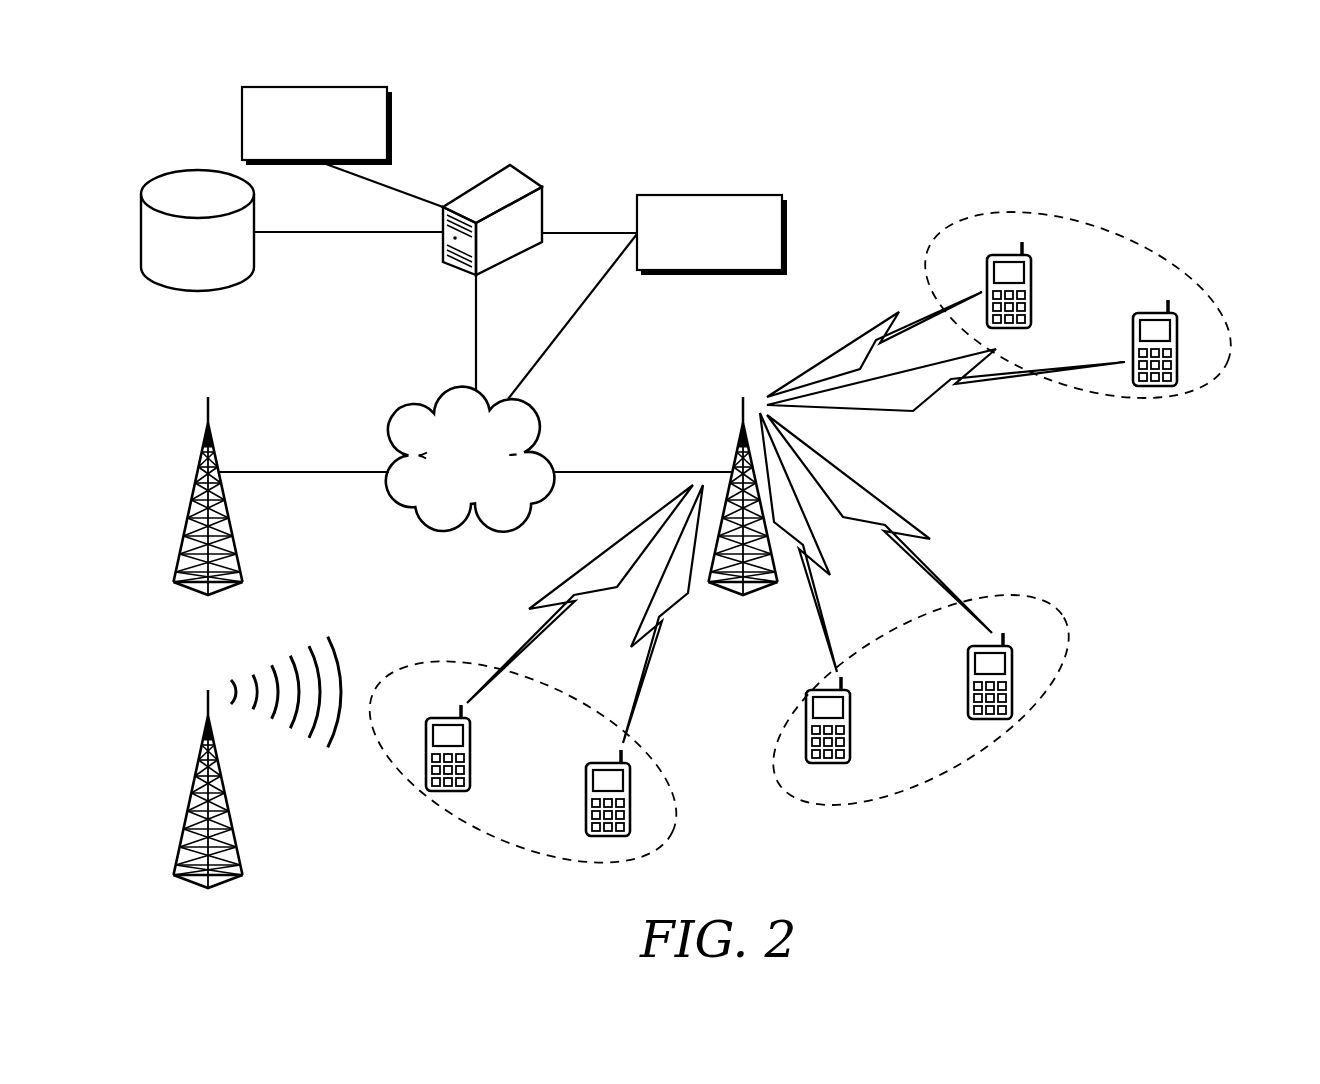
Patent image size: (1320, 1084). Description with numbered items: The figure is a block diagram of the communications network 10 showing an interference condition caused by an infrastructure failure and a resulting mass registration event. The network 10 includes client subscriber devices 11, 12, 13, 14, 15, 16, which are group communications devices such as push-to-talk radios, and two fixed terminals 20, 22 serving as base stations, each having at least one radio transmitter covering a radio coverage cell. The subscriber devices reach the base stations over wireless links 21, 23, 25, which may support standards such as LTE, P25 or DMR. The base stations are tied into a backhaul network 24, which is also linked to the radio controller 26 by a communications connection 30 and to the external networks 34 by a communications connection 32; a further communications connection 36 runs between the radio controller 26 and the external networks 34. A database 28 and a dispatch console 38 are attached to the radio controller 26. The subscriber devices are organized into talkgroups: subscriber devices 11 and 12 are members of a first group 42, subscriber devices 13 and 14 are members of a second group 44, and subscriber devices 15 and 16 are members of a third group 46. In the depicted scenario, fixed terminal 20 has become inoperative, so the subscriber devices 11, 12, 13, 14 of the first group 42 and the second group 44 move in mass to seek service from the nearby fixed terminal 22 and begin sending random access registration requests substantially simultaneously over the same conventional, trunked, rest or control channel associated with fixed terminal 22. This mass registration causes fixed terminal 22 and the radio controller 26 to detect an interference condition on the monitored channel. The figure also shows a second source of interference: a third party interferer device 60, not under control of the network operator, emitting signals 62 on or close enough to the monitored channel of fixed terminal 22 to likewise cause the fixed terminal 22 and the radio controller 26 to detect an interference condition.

The communications network 10 is at (1097, 842).
The subscriber device 11 is at (445, 718).
The subscriber device 12 is at (607, 763).
The subscriber device 13 is at (1005, 255).
The subscriber device 14 is at (1150, 313).
The subscriber device 15 is at (850, 726).
The subscriber device 16 is at (1012, 682).
The fixed terminal 20 is at (214, 438).
The wireless link 21 is at (993, 417).
The fixed terminal 22 is at (737, 449).
The wireless link 23 is at (790, 632).
The backhaul network 24 is at (451, 533).
The wireless link 25 is at (672, 700).
The radio controller 26 is at (536, 180).
The database 28 is at (160, 180).
The communications connection 30 is at (474, 342).
The communications connection 32 is at (577, 310).
The external networks 34 is at (762, 196).
The communications connection 36 is at (592, 228).
The dispatch console 38 is at (366, 88).
The first group G_A 42 is at (672, 820).
The second group G_B 44 is at (1232, 352).
The third group G_C 46 is at (1050, 612).
The third party interferer device 60 is at (214, 731).
The signals 62 is at (295, 770).